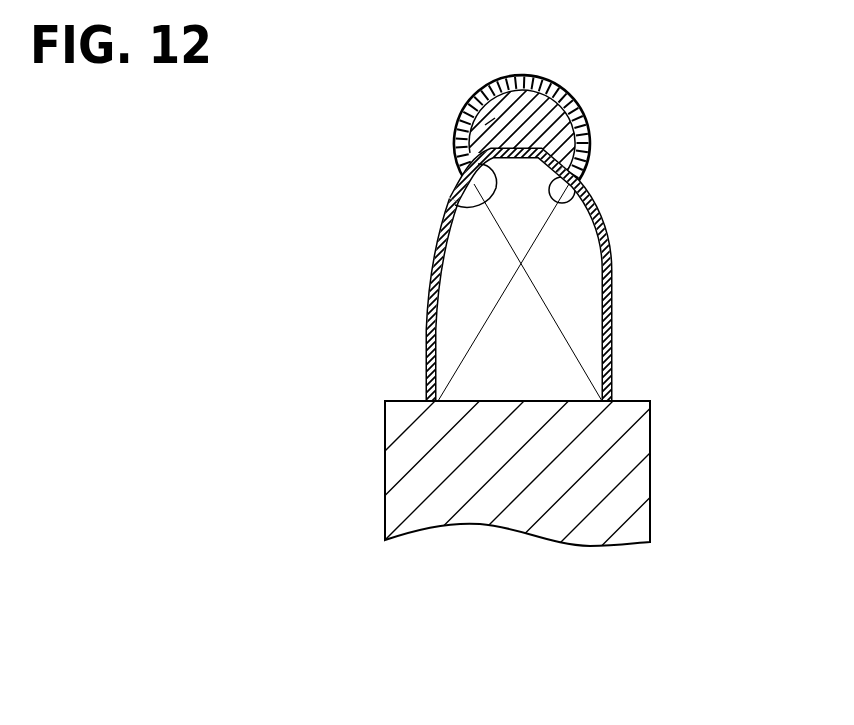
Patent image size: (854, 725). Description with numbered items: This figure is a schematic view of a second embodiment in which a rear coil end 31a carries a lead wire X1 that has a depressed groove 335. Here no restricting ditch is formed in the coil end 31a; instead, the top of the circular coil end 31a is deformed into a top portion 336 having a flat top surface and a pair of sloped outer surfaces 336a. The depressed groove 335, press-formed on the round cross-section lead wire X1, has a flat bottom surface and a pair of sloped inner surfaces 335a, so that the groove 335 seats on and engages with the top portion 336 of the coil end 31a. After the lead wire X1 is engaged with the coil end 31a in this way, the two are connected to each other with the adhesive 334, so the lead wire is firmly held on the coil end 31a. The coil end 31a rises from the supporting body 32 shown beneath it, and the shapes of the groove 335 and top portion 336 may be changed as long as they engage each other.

The base member 32 is at (632, 488).
The coil end 31a is at (580, 306).
The adhesive 334 is at (454, 140).
The depressed groove 335 is at (523, 147).
The sloped inner surfaces 335a is at (455, 205).
The top portion 336 is at (522, 178).
The sloped outer surfaces 336a is at (588, 195).
The lead wire X1 is at (490, 121).